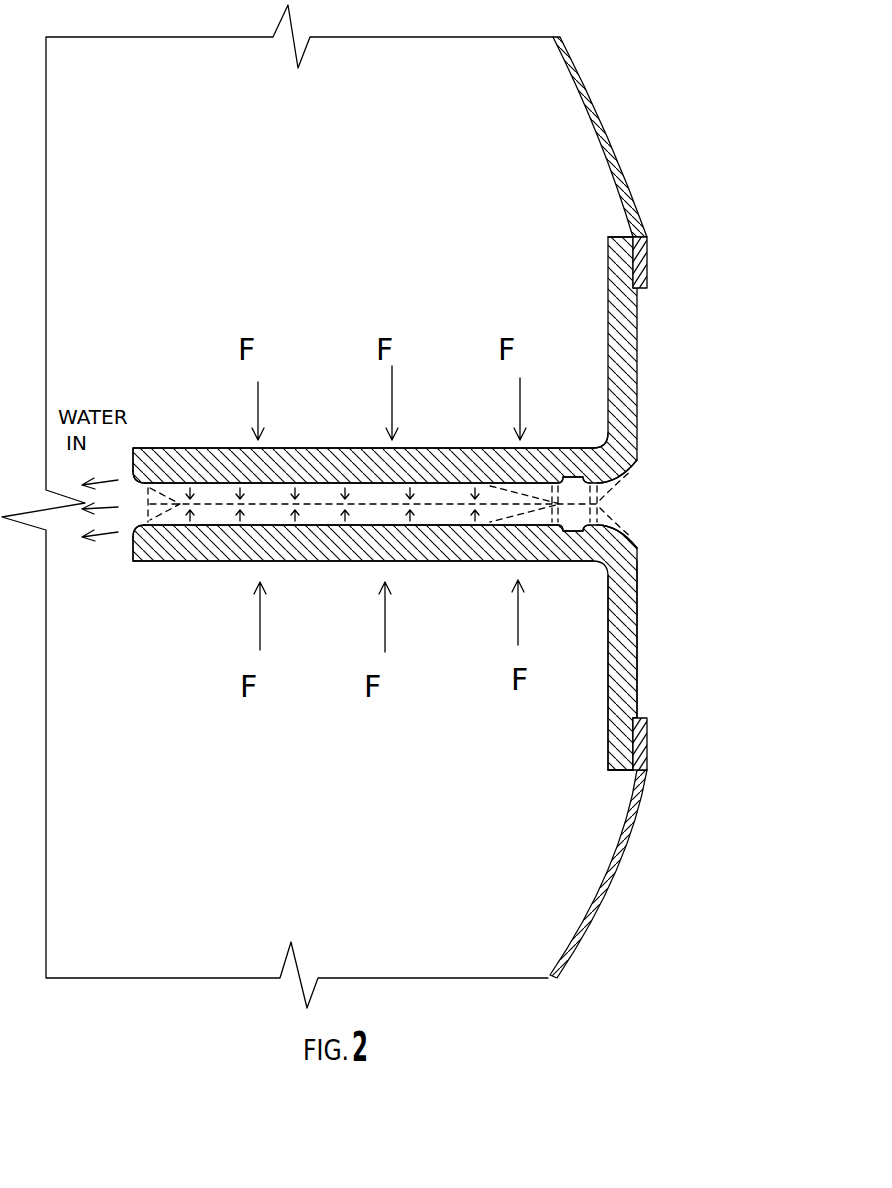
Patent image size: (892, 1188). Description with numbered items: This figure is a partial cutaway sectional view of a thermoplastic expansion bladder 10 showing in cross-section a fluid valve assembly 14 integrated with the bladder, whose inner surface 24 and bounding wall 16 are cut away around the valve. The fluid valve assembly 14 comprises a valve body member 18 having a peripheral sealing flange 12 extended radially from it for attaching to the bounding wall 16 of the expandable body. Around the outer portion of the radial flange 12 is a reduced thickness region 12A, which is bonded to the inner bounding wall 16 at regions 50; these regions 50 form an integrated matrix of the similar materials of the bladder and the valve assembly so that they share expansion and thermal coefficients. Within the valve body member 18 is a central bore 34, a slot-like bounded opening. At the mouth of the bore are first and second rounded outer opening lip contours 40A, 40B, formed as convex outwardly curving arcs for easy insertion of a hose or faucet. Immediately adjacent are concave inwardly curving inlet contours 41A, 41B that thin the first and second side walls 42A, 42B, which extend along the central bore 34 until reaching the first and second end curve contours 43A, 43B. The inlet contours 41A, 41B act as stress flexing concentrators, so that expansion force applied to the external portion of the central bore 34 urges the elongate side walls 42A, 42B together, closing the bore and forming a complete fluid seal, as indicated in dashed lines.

The thermoplastic expansion bladder 10 is at (632, 45).
The peripheral sealing flange 12 is at (608, 690).
The reduced thickness region 12A is at (618, 237).
The fluid valve assembly 14 is at (640, 345).
The bounding wall 16 is at (651, 848).
The valve body member 18 is at (597, 422).
The inner surface 24 is at (582, 124).
The central bore 34 is at (661, 507).
The first side rounded outer opening lip contour 40A is at (641, 471).
The second side rounded outer opening lip contour 40B is at (633, 540).
The first side inlet contour 41A is at (576, 478).
The second side inlet contour 41B is at (580, 532).
The first side wall 42A is at (318, 446).
The second side wall 42B is at (313, 564).
The first end curve contour 43A is at (150, 470).
The second end curve contour 43B is at (147, 533).
The bonding regions 50 is at (638, 243).